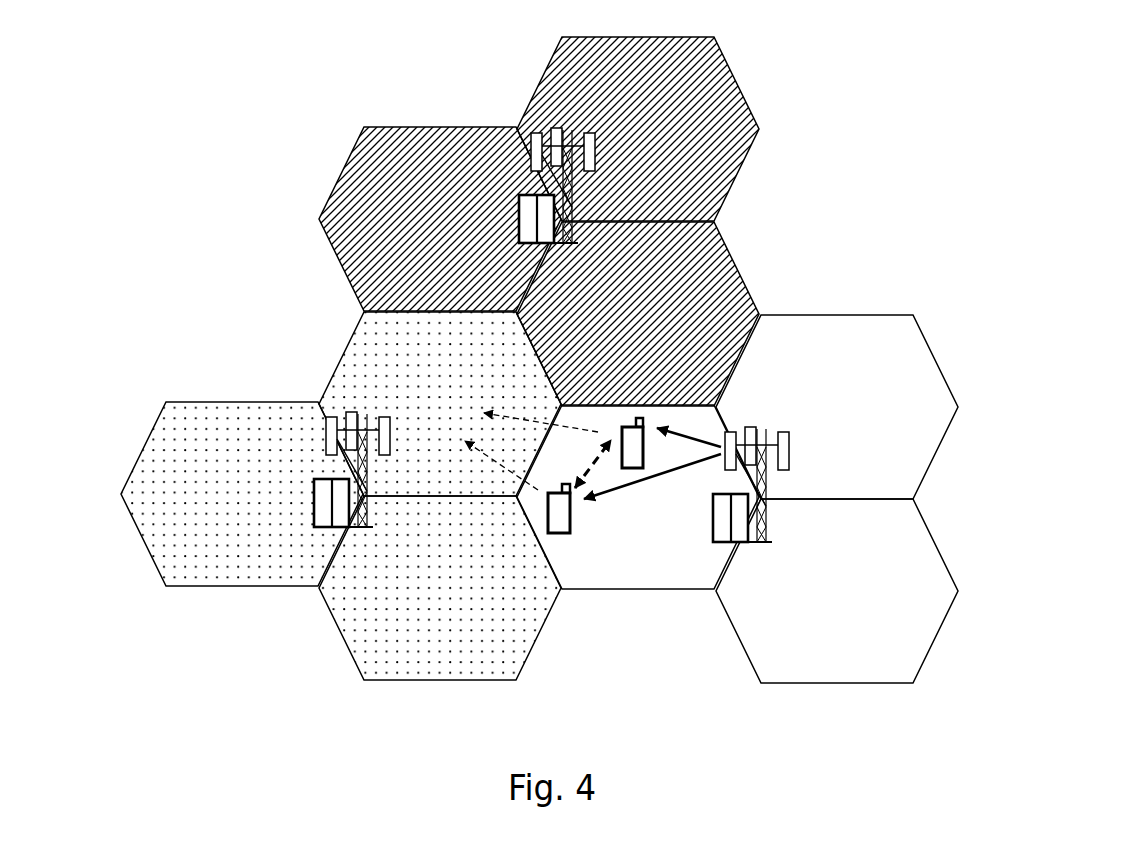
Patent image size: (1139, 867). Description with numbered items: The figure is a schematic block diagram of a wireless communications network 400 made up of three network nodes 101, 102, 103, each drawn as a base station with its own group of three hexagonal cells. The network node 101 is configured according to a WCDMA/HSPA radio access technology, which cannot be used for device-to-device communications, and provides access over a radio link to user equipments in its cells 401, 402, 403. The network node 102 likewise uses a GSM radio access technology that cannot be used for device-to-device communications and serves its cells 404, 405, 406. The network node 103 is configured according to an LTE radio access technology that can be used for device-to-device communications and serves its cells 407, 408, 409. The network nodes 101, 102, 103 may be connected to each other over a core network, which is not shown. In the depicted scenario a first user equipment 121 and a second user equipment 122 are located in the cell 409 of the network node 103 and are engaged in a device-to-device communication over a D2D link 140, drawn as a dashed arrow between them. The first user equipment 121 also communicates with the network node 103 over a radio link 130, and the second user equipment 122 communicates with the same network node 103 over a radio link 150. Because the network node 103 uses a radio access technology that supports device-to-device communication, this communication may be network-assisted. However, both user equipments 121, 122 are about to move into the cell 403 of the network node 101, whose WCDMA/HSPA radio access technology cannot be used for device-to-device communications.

The wireless communications network 400 is at (616, 398).
The cell 401 is at (216, 434).
The cell 402 is at (417, 675).
The cell 403 is at (416, 344).
The cell 404 is at (416, 164).
The cell 405 is at (612, 72).
The cell 406 is at (714, 254).
The cell 407 is at (812, 352).
The cell 408 is at (812, 683).
The cell 409 is at (706, 578).
The network node 101 is at (313, 503).
The network node 102 is at (519, 222).
The network node 103 is at (770, 536).
The first user equipment 121 is at (548, 531).
The second user equipment 122 is at (629, 426).
The radio link 130 is at (624, 483).
The D2D link 140 is at (598, 460).
The radio link 150 is at (697, 437).